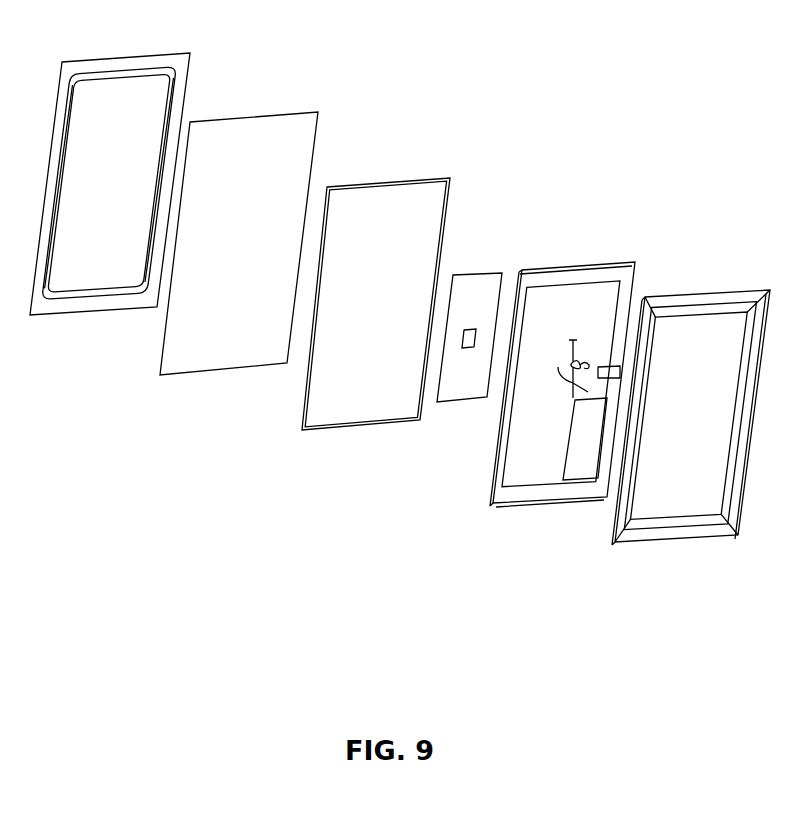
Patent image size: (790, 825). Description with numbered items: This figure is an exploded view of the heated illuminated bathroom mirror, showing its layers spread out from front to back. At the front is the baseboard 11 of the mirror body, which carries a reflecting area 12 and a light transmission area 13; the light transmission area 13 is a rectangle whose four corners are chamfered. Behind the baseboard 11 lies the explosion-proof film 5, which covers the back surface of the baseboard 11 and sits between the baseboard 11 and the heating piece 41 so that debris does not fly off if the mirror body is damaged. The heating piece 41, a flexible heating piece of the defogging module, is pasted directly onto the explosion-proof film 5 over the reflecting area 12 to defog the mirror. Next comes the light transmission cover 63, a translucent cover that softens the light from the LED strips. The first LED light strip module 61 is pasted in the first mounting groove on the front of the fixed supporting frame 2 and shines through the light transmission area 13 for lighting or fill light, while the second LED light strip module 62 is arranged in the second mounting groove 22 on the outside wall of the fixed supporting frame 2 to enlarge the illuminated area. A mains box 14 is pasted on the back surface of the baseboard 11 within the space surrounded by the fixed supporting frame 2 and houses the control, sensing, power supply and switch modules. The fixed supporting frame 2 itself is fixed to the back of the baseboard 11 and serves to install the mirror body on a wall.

The baseboard 11 is at (184, 56).
The reflecting area 12 is at (64, 209).
The light transmission area 13 is at (42, 257).
The explosion-proof film 5 is at (181, 349).
The light transmission cover 63 is at (297, 423).
The heating piece 41 is at (475, 283).
The second LED light strip module 62 is at (498, 452).
The first LED light strip module 61 is at (496, 484).
The mains box 14 is at (578, 461).
The fixed supporting frame 2 is at (683, 301).
The second mounting groove 22 is at (616, 538).